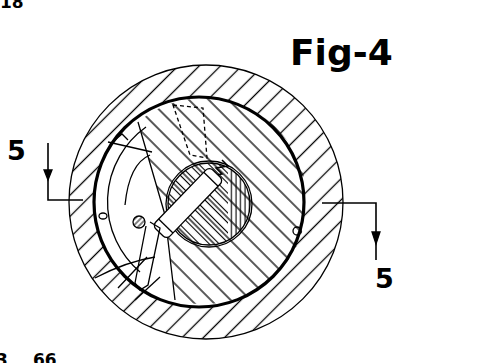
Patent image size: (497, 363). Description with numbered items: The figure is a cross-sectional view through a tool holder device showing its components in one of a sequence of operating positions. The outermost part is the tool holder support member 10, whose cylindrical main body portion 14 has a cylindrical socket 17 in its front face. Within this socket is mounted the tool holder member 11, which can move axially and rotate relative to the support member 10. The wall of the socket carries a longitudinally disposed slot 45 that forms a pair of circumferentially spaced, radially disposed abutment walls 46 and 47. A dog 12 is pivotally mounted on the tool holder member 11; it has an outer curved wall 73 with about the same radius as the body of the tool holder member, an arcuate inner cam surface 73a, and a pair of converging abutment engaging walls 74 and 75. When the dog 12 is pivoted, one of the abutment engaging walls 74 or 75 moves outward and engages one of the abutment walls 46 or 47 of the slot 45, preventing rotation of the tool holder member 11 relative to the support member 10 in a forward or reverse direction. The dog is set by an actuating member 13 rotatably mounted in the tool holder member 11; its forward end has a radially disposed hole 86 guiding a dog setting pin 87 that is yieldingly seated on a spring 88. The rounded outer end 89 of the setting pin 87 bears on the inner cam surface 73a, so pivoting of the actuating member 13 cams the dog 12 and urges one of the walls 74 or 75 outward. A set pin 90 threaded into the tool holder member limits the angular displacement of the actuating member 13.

The tool holder support member 10 is at (227, 56).
The tool holder member 11 is at (299, 140).
The dog 12 is at (123, 249).
The actuating member 13 is at (302, 158).
The cylindrical main body portion 14 is at (315, 105).
The cylindrical socket 17 is at (297, 240).
The longitudinally disposed slot 45 is at (103, 214).
The abutment wall 46 is at (115, 142).
The abutment wall 47 is at (118, 289).
The outer curved wall 73 is at (99, 215).
The arcuate inner cam surface 73a is at (158, 214).
The abutment engaging wall 74 is at (98, 278).
The abutment engaging wall 75 is at (108, 142).
The radially disposed hole 86 is at (247, 206).
The dog setting pin 87 is at (190, 245).
The spring 88 is at (244, 171).
The rounded outer end 89 is at (135, 301).
The set pin 90 is at (176, 106).